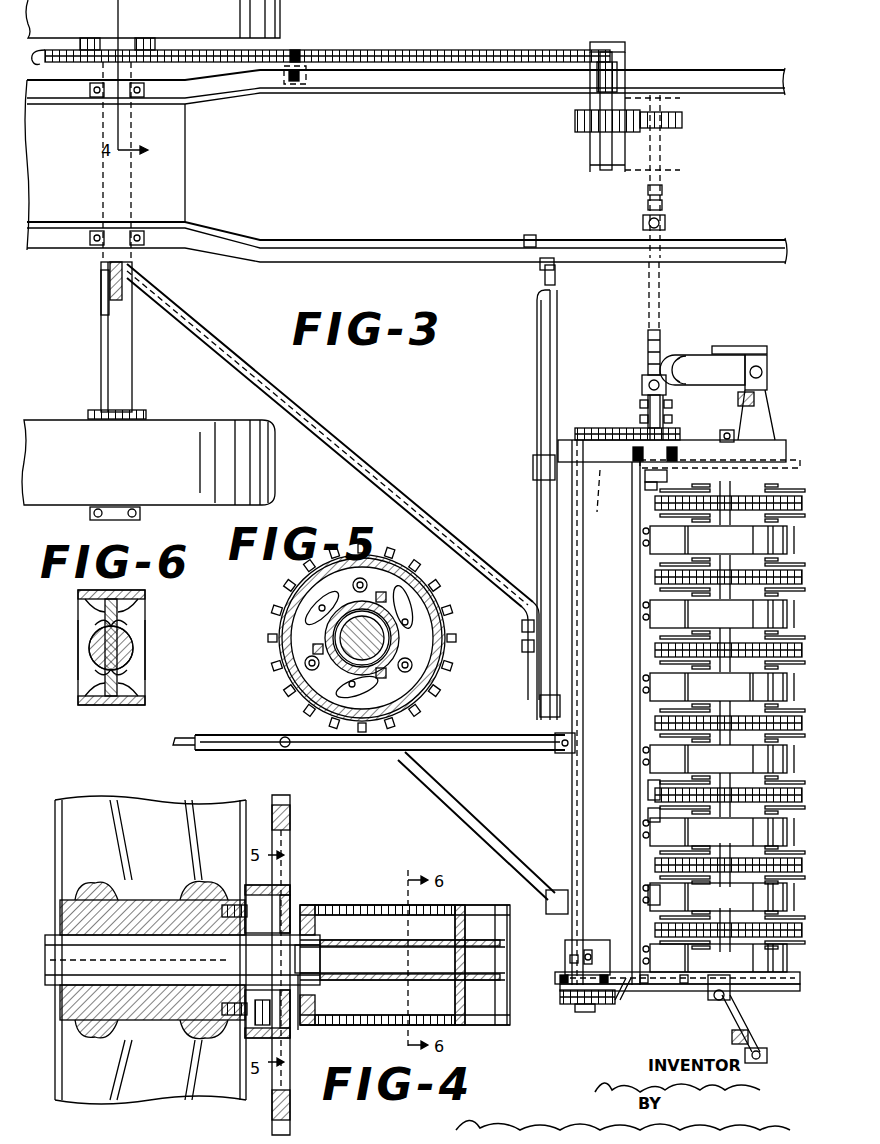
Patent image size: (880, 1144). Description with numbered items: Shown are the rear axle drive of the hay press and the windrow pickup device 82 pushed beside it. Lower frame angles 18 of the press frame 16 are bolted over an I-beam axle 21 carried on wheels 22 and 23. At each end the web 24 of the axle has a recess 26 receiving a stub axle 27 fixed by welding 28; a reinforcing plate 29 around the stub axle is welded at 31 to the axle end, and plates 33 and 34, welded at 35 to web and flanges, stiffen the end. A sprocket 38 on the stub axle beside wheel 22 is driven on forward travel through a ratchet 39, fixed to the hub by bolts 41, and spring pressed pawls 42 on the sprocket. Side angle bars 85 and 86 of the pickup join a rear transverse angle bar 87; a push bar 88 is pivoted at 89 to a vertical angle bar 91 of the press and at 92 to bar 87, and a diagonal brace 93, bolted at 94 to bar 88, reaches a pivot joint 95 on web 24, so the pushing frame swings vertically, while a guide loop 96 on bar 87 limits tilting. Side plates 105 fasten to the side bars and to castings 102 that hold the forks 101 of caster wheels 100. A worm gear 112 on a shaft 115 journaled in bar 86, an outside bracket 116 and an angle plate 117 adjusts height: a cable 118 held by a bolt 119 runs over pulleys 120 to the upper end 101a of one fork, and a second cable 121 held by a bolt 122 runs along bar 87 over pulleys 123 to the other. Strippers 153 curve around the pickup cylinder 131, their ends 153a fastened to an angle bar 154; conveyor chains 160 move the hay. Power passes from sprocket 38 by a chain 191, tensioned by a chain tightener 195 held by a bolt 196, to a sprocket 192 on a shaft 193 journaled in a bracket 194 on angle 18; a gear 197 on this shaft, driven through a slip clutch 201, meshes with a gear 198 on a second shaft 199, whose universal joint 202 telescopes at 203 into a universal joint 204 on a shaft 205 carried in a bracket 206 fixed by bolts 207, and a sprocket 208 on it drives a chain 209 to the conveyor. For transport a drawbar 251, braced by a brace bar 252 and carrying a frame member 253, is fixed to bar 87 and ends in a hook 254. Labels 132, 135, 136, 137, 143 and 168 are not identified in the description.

In FIG. 3, the frame 16 is at (736, 70).
In FIG. 3, the lower angle members 18 is at (390, 88).
In FIG. 3, the I-beam axle 21 is at (136, 363).
In FIG. 4, the I-beam axle 21 is at (500, 895).
In FIG. 6, the I-beam axle 21 is at (108, 590).
In FIG. 3, the carrying wheel 22 is at (172, 22).
In FIG. 4, the carrying wheel 22 is at (145, 812).
In FIG. 3, the carrying wheel 23 is at (185, 432).
In FIG. 3, the central web portion 24 is at (106, 298).
In FIG. 4, the central web portion 24 is at (497, 992).
In FIG. 6, the central web portion 24 is at (118, 672).
In FIG. 4, the recess 26 is at (312, 945).
In FIG. 6, the recess 26 is at (133, 650).
In FIG. 3, the stub axle 27 is at (127, 413).
In FIG. 4, the stub axle 27 is at (147, 942).
In FIG. 5, the stub axle 27 is at (372, 644).
In FIG. 6, the stub axle 27 is at (115, 645).
In FIG. 4, the welding 28 is at (392, 962).
In FIG. 6, the welding 28 is at (98, 626).
In FIG. 4, the rectangular reinforcing plate 29 is at (300, 1016).
In FIG. 4, the welding 31 is at (318, 1000).
In FIG. 4, the plate 33 is at (467, 957).
In FIG. 6, the plate 33 is at (135, 682).
In FIG. 6, the plate 34 is at (88, 674).
In FIG. 4, the welding 35 is at (442, 937).
In FIG. 6, the welding 35 is at (86, 604).
In FIG. 3, the sprocket 38 is at (36, 67).
In FIG. 4, the sprocket 38 is at (286, 808).
In FIG. 4, the ratchet 39 is at (282, 902).
In FIG. 4, the bolts 41 is at (248, 917).
In FIG. 5, the bolts 41 is at (372, 580).
In FIG. 4, the spring pressed pawls 42 is at (270, 1036).
In FIG. 5, the spring pressed pawls 42 is at (412, 602).
In FIG. 3, the pickup device 82 is at (654, 1010).
In FIG. 3, the side angle bar 85 is at (770, 440).
In FIG. 3, the side angle bar 86 is at (738, 990).
In FIG. 3, the rear transverse angle bar 87 is at (568, 800).
In FIG. 3, the transverse bar 88 is at (540, 410).
In FIG. 3, the pivot 89 is at (558, 283).
In FIG. 3, the vertically extending angle bar 91 is at (542, 270).
In FIG. 3, the pivot 92 is at (540, 725).
In FIG. 3, the diagonal brace member 93 is at (338, 458).
In FIG. 3, the bolts 94 is at (522, 646).
In FIG. 3, the pivot joint 95 is at (110, 277).
In FIG. 3, the guide loop 96 is at (533, 466).
In FIG. 3, the carrying caster wheels 100 is at (705, 362).
In FIG. 3, the caster fork 101 is at (734, 346).
In FIG. 3, the upper end of caster fork 101a is at (765, 358).
In FIG. 3, the casting 102 is at (756, 396).
In FIG. 3, the side plates 105 is at (735, 462).
In FIG. 3, the worm gear 112 is at (562, 996).
In FIG. 3, the shaft 115 is at (585, 1012).
In FIG. 3, the outside bracket 116 is at (614, 1003).
In FIG. 3, the angle plate 117 is at (598, 955).
In FIG. 3, the cable 118 is at (660, 991).
In FIG. 3, the bolt 119 is at (558, 978).
In FIG. 3, the pulleys 120 is at (708, 1002).
In FIG. 3, the second cable 121 is at (584, 614).
In FIG. 3, the bolt 122 is at (588, 948).
In FIG. 3, the pulleys 123 is at (738, 398).
In FIG. 3, the pickup cylinder 131 is at (804, 759).
In FIG. 3, the block 132 is at (738, 918).
In FIG. 3, the end plate 135 is at (802, 897).
In FIG. 3, the end plate 136 is at (804, 541).
In FIG. 3, the end plate 137 is at (804, 687).
In FIG. 3, the end plates 143 is at (804, 723).
In FIG. 3, the strippers 153 is at (748, 540).
In FIG. 3, the ends of strippers 153a is at (650, 790).
In FIG. 3, the transversely disposed angle bar 154 is at (638, 815).
In FIG. 3, the endless conveyor chains 160 is at (716, 582).
In FIG. 3, the rod 168 is at (748, 772).
In FIG. 3, the chain 191 is at (403, 50).
In FIG. 3, the second sprocket 192 is at (626, 60).
In FIG. 3, the shaft 193 is at (600, 42).
In FIG. 3, the bracket 194 is at (598, 44).
In FIG. 3, the chain tightener 195 is at (300, 50).
In FIG. 3, the bolt 196 is at (294, 84).
In FIG. 3, the gear 197 is at (575, 120).
In FIG. 3, the gear 198 is at (682, 120).
In FIG. 3, the second shaft 199 is at (672, 151).
In FIG. 3, the slip clutch 201 is at (618, 72).
In FIG. 3, the universal joint 202 is at (666, 213).
In FIG. 3, the telescopic connection 203 is at (660, 306).
In FIG. 3, the universal joint 204 is at (642, 392).
In FIG. 3, the shaft 205 is at (650, 486).
In FIG. 3, the bracket 206 is at (668, 474).
In FIG. 3, the bolts 207 is at (637, 458).
In FIG. 3, the sprocket 208 is at (680, 430).
In FIG. 3, the chain 209 is at (616, 428).
In FIG. 3, the drawbar 251 is at (355, 751).
In FIG. 3, the diagonal brace bar 252 is at (488, 833).
In FIG. 3, the frame member 253 is at (285, 748).
In FIG. 3, the hook 254 is at (176, 745).